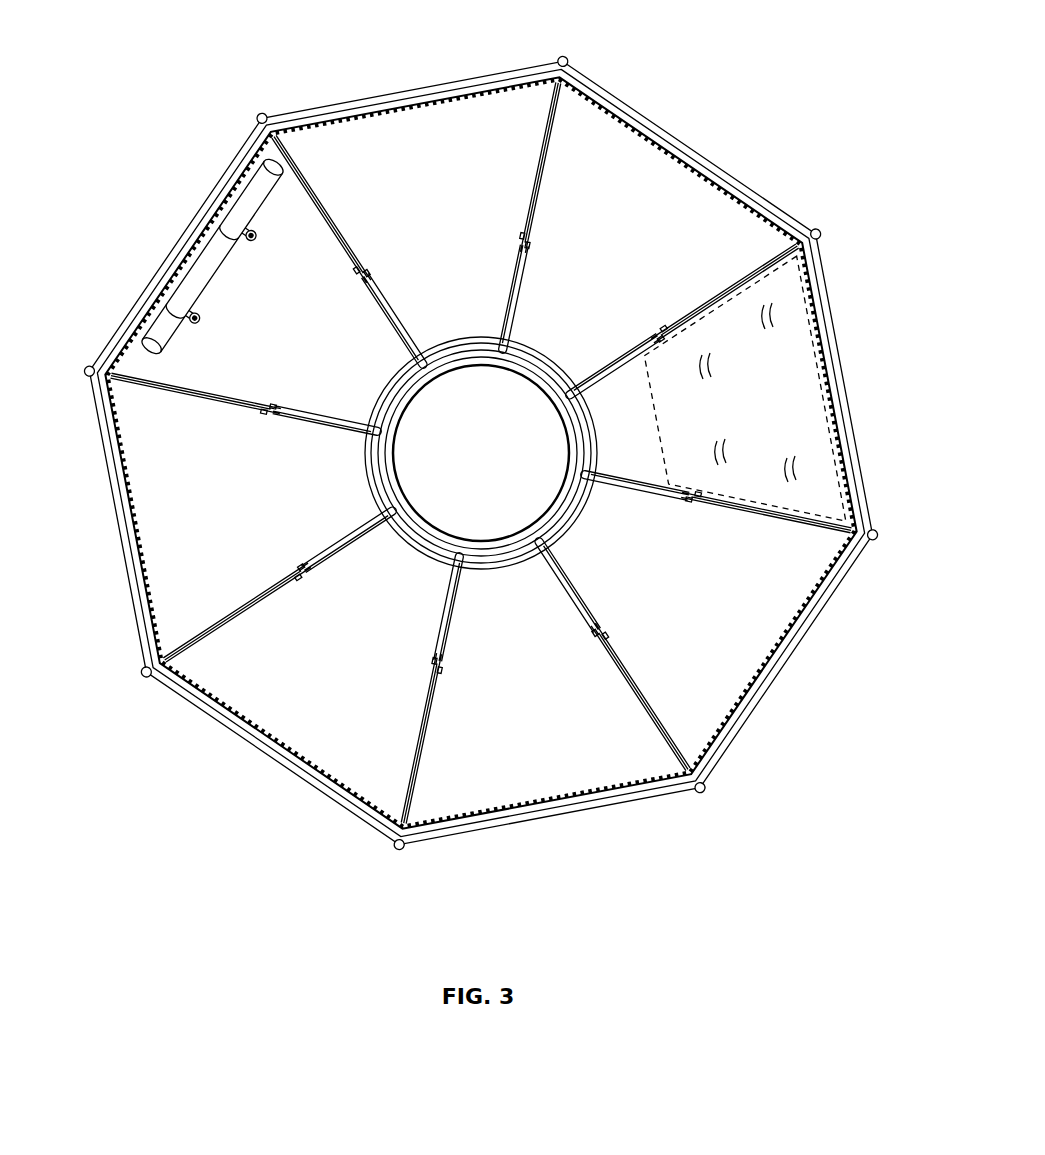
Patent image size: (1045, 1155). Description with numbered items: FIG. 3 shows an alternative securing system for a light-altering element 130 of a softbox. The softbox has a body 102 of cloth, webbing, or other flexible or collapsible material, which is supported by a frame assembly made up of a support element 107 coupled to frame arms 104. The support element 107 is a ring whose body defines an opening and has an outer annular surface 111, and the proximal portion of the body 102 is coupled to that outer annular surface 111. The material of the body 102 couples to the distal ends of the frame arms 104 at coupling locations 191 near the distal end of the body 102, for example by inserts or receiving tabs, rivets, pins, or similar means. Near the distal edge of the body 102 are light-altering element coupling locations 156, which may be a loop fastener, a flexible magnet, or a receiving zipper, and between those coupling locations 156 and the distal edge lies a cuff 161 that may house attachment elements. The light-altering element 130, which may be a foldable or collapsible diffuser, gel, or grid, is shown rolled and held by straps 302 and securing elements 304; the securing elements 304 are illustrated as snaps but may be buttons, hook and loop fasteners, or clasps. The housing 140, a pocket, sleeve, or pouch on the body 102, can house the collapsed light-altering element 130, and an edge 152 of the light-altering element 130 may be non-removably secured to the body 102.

The body 102 is at (521, 80).
The frame arms 104 is at (191, 636).
The support element 107 is at (557, 367).
The outer annular surface 111 is at (516, 124).
The light-altering element 130 is at (253, 197).
The housing 140 is at (722, 421).
The edge 152 is at (249, 158).
The light-altering element coupling locations 156 is at (133, 537).
The cuff 161 is at (99, 447).
The coupling locations 191 is at (256, 111).
The straps 302 is at (243, 232).
The securing elements 304 is at (222, 230).